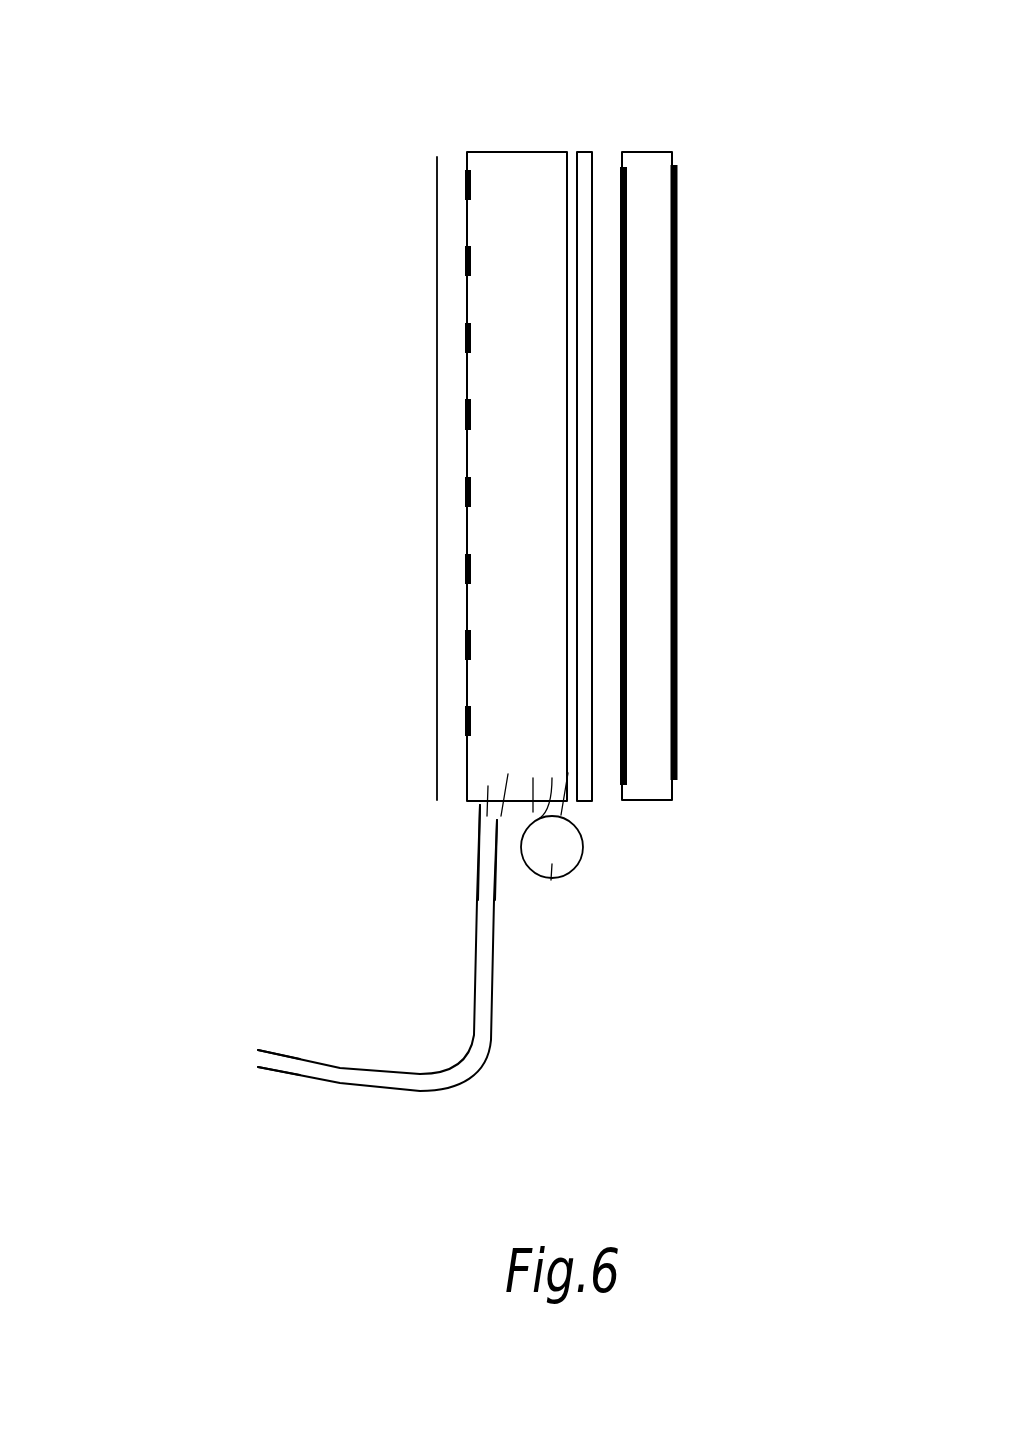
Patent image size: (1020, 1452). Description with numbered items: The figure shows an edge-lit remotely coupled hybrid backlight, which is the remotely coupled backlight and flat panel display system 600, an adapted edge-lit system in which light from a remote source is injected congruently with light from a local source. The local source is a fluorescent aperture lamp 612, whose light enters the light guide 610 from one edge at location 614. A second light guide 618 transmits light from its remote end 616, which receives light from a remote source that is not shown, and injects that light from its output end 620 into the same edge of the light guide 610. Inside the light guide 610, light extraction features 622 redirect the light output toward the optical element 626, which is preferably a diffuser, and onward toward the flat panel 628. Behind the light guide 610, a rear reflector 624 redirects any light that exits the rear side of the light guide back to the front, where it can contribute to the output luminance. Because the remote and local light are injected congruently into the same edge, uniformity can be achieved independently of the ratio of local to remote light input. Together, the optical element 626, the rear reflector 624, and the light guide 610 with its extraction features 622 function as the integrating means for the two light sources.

The remotely coupled backlight and flat panel display system 600 is at (213, 48).
The light guide 610 is at (507, 525).
The fluorescent aperture lamp 612 is at (551, 880).
The location 614 is at (583, 847).
The remote end 616 is at (252, 1058).
The light guide 618 is at (473, 1063).
The output end 620 is at (480, 833).
The light extraction features 622 is at (468, 415).
The rear reflector 624 is at (437, 258).
The optical element 626 is at (583, 163).
The flat panel 628 is at (645, 192).